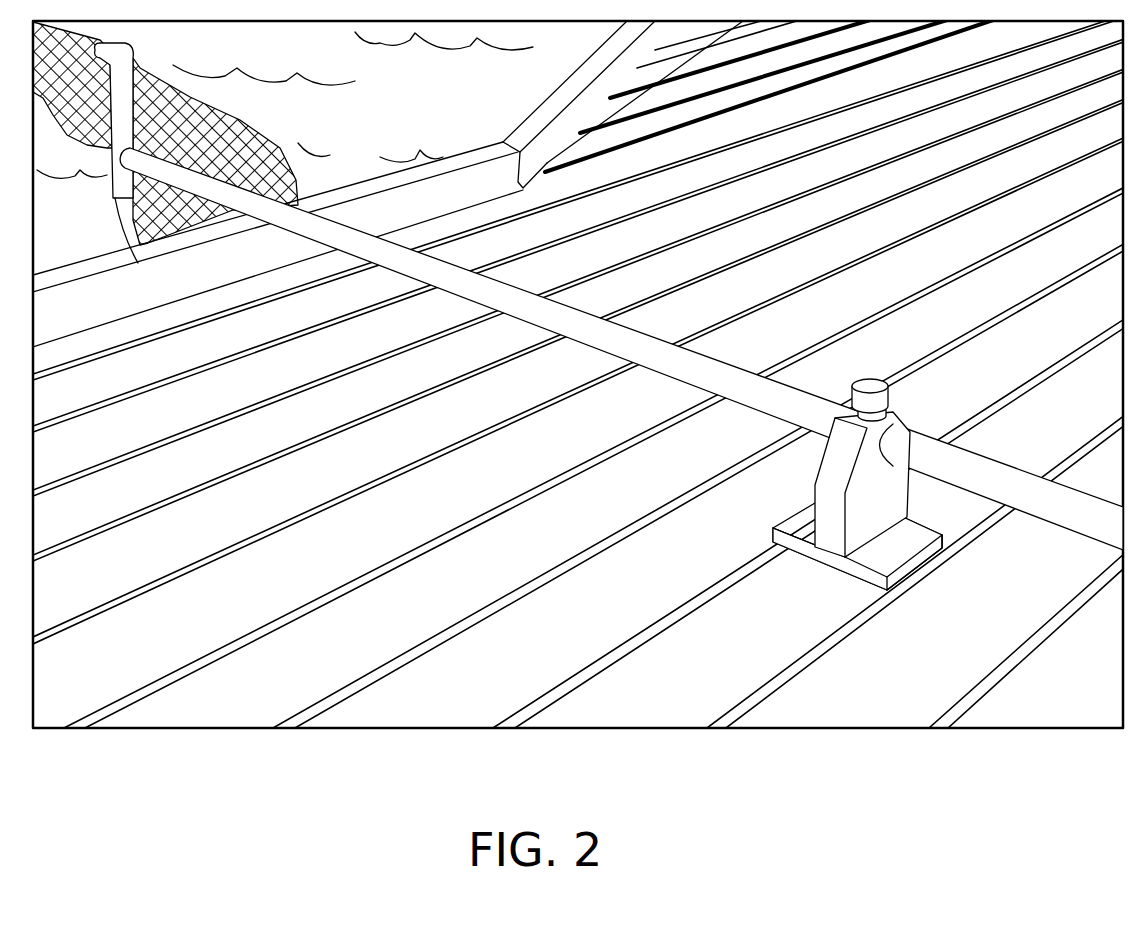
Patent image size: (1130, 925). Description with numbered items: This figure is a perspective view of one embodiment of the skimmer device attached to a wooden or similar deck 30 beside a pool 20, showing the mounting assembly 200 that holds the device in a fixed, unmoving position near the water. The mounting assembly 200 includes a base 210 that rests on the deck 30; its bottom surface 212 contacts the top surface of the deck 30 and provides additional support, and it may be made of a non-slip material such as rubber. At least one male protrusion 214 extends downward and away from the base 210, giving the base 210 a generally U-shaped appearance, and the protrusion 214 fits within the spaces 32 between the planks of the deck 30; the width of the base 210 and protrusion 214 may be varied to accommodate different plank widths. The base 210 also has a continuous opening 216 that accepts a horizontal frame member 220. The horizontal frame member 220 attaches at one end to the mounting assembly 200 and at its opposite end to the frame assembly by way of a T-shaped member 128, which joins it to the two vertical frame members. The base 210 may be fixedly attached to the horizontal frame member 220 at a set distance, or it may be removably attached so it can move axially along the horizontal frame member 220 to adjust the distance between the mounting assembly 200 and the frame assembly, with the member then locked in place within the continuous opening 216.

The pool 20 is at (397, 125).
The deck 30 is at (703, 648).
The spaces between planks 32 is at (705, 592).
The T-shaped member 128 is at (125, 182).
The mounting assembly 200 is at (864, 448).
The base 210 is at (838, 500).
The bottom surface 212 is at (870, 552).
The male protrusion 214 is at (913, 568).
The continuous opening 216 is at (890, 418).
The horizontal frame member 220 is at (545, 308).